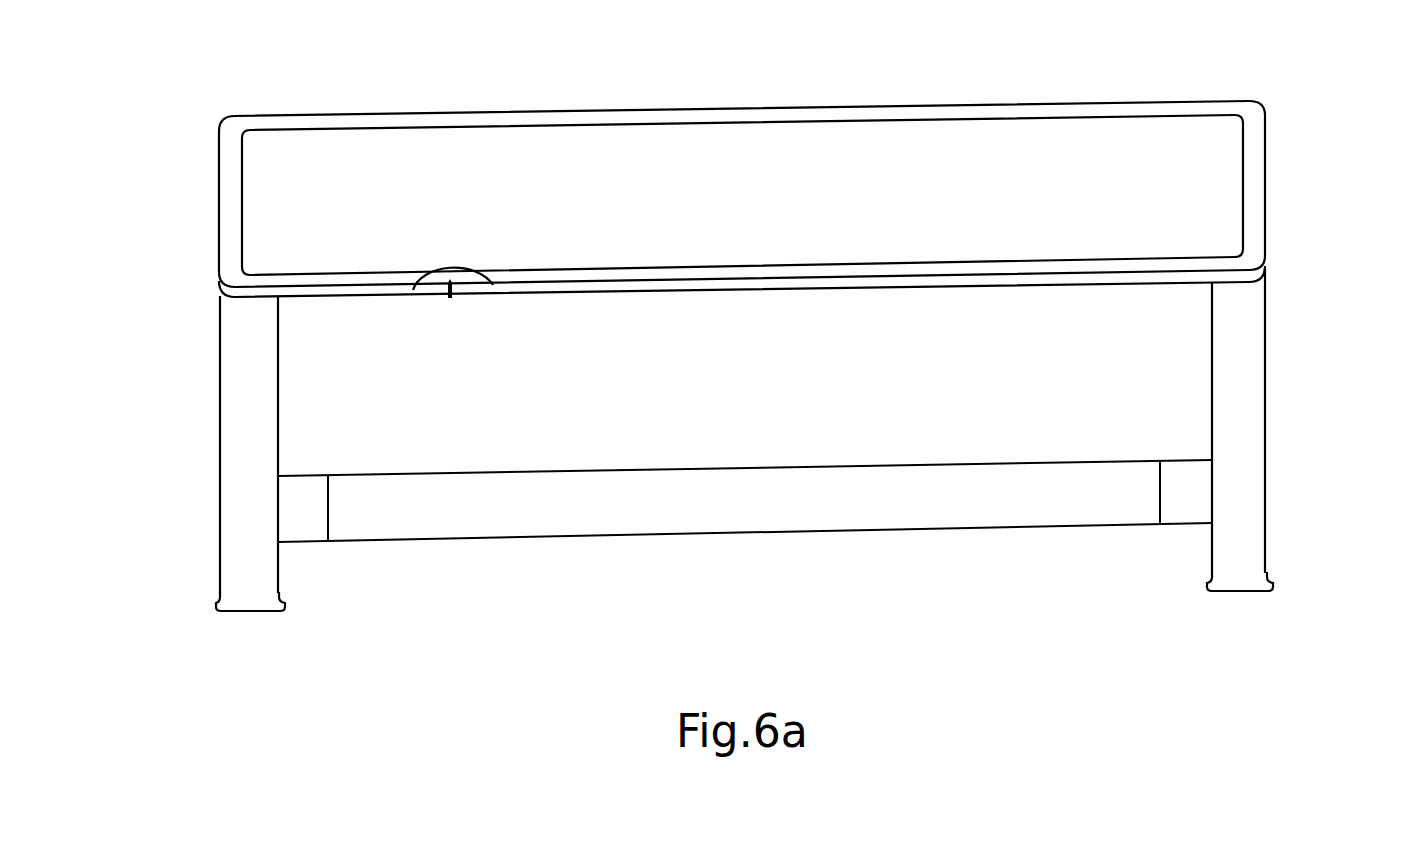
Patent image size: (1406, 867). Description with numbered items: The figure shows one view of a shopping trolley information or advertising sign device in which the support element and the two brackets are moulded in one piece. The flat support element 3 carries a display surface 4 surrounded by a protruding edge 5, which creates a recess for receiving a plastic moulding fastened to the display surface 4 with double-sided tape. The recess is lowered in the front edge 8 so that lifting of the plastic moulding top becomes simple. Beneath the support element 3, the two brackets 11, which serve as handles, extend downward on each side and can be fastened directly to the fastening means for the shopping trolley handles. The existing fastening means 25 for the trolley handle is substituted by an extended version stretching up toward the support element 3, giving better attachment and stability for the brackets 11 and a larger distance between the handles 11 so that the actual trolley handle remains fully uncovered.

The flat support element 3 is at (228, 117).
The display surface 4 is at (668, 183).
The protruding edge 5 is at (233, 187).
The front edge 8 is at (745, 456).
The bracket 11 is at (245, 353).
The fastening means 25 is at (248, 568).